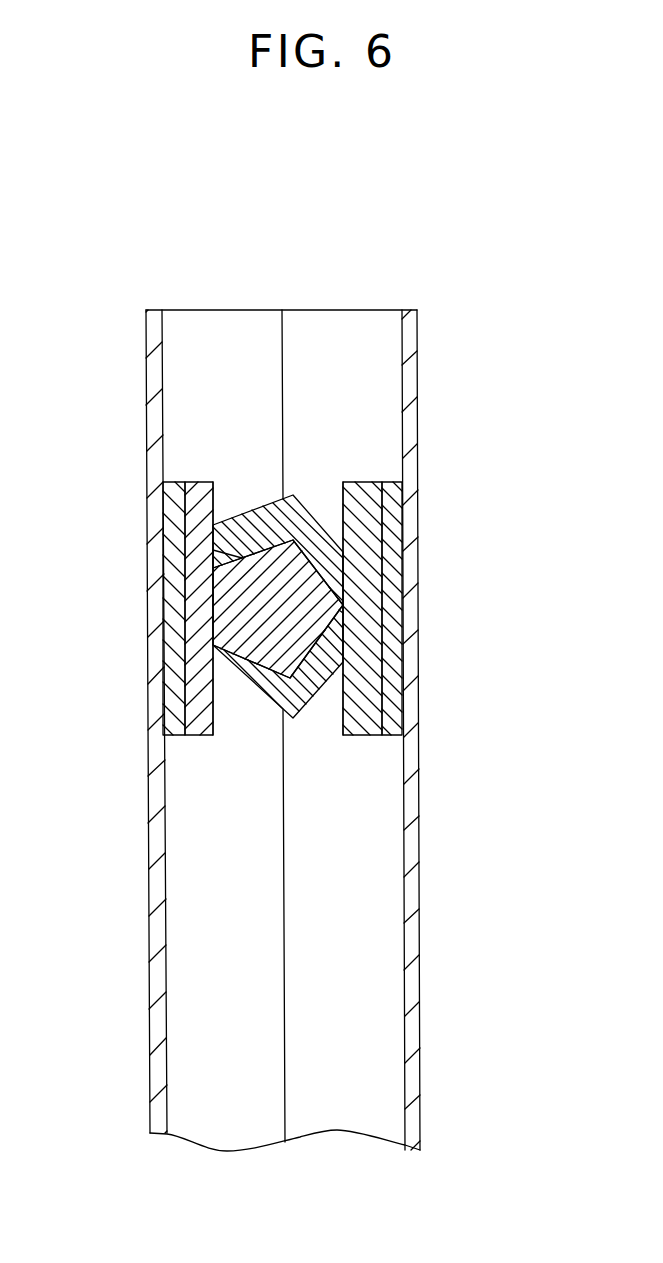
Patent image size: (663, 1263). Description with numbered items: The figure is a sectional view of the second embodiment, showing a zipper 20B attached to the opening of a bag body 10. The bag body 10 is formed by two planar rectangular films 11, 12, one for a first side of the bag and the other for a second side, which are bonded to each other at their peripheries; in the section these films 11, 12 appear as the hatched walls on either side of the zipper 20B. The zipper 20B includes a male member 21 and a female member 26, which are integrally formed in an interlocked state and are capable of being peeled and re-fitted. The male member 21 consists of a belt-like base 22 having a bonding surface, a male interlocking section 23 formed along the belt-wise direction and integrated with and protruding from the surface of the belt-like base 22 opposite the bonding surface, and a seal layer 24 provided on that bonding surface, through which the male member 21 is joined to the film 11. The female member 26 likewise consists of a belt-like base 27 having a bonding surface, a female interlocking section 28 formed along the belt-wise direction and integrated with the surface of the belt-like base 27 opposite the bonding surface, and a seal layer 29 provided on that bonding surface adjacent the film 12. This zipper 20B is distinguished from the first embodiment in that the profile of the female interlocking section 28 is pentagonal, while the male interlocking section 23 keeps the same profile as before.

The bag body 10 is at (286, 730).
The film 11 is at (160, 1122).
The film 12 is at (413, 1130).
The zipper 20B is at (362, 735).
The male member 21 is at (185, 637).
The belt-like base 22 is at (182, 700).
The male interlocking section 23 is at (272, 645).
The seal layer 24 is at (176, 658).
The female member 26 is at (376, 581).
The belt-like base 27 is at (362, 532).
The female interlocking section 28 is at (297, 520).
The seal layer 29 is at (435, 608).